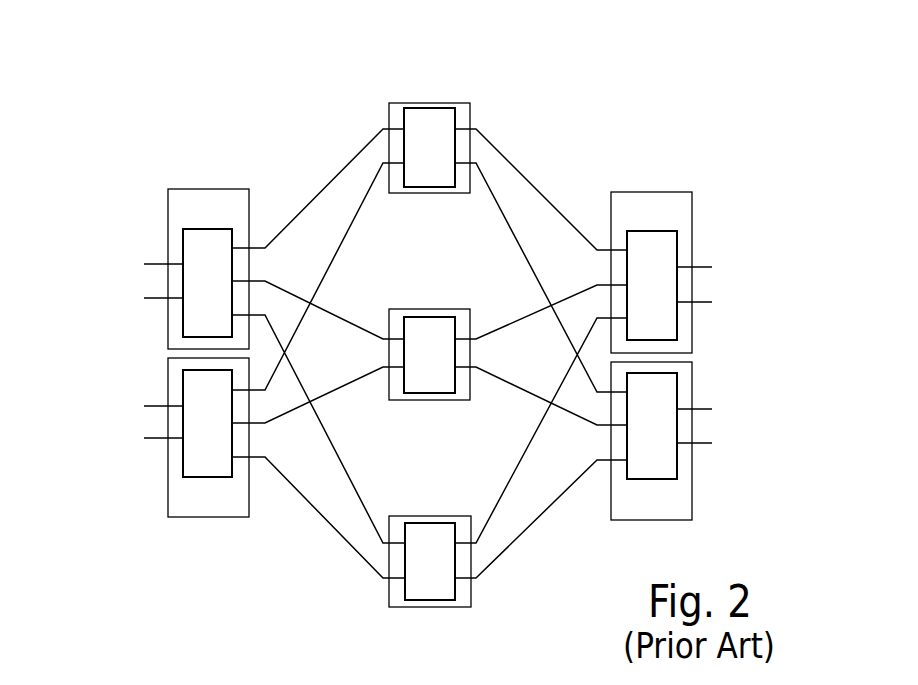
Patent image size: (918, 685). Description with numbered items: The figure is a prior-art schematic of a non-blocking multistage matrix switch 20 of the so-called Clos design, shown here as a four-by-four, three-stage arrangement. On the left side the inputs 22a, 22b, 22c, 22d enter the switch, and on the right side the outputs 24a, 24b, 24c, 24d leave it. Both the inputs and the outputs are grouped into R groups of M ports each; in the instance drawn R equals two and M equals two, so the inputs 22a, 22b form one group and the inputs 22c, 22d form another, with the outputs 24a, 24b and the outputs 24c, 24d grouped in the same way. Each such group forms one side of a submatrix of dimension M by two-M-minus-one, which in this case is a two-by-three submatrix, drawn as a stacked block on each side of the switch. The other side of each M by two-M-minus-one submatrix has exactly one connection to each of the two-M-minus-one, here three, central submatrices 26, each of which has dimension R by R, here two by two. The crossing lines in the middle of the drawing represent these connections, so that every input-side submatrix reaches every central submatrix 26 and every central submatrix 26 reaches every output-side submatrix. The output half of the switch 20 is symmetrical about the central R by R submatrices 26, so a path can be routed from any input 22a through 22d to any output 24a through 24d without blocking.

The non-blocking multistage matrix switch 20 is at (694, 129).
The input 22a is at (157, 264).
The input 22b is at (157, 298).
The input 22c is at (157, 406).
The input 22d is at (157, 438).
The output 24a is at (700, 265).
The output 24b is at (703, 298).
The output 24c is at (700, 405).
The output 24d is at (703, 441).
The central submatrix 26 is at (435, 130).